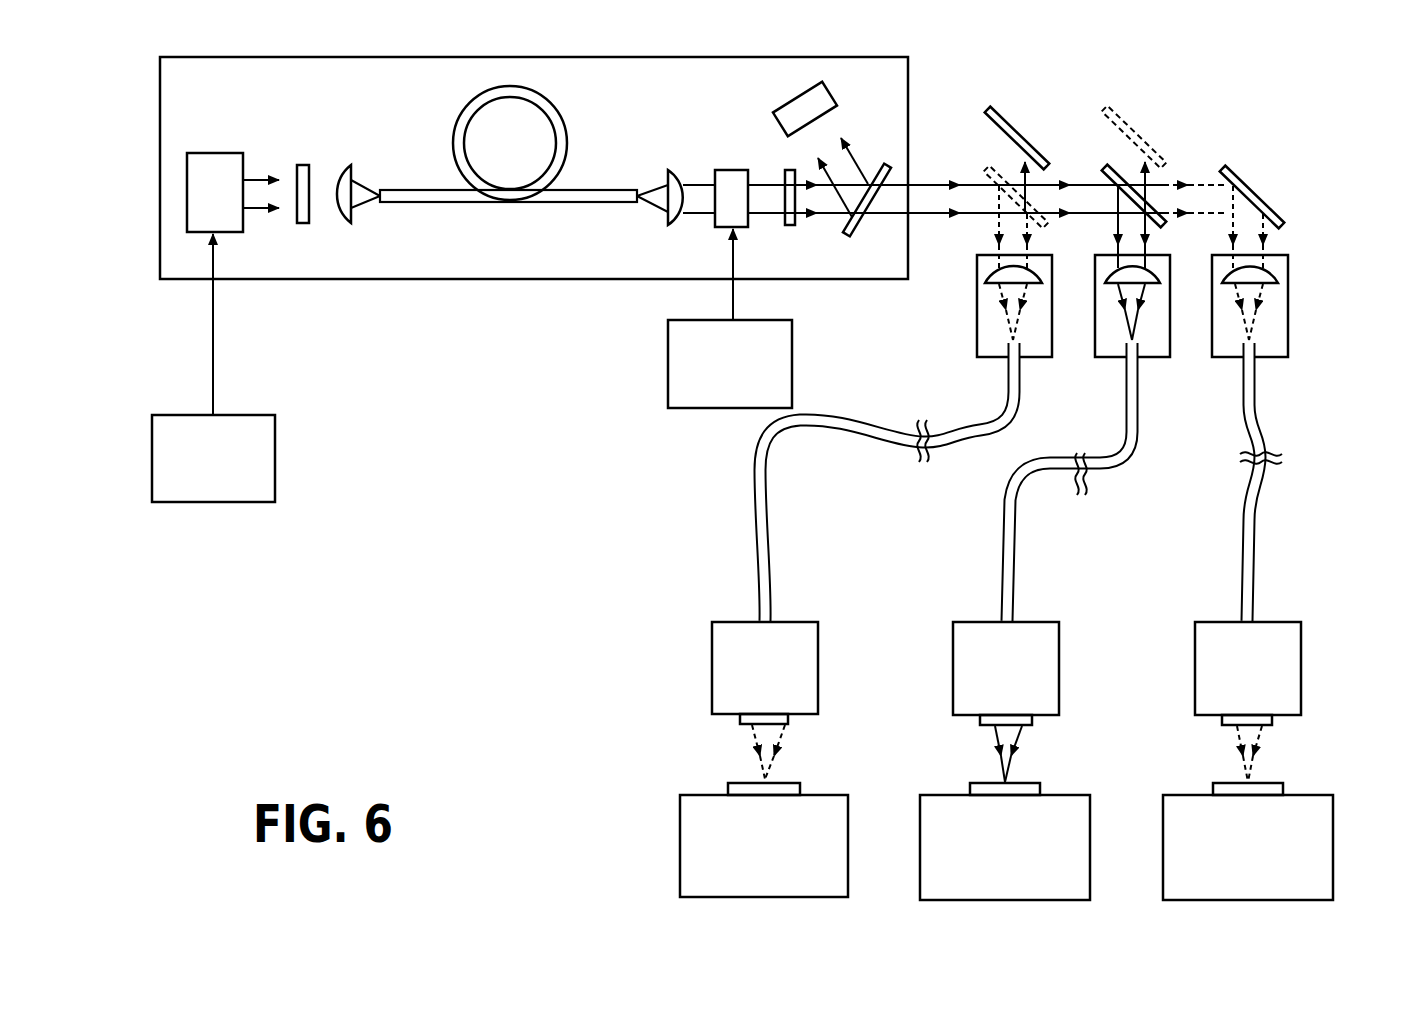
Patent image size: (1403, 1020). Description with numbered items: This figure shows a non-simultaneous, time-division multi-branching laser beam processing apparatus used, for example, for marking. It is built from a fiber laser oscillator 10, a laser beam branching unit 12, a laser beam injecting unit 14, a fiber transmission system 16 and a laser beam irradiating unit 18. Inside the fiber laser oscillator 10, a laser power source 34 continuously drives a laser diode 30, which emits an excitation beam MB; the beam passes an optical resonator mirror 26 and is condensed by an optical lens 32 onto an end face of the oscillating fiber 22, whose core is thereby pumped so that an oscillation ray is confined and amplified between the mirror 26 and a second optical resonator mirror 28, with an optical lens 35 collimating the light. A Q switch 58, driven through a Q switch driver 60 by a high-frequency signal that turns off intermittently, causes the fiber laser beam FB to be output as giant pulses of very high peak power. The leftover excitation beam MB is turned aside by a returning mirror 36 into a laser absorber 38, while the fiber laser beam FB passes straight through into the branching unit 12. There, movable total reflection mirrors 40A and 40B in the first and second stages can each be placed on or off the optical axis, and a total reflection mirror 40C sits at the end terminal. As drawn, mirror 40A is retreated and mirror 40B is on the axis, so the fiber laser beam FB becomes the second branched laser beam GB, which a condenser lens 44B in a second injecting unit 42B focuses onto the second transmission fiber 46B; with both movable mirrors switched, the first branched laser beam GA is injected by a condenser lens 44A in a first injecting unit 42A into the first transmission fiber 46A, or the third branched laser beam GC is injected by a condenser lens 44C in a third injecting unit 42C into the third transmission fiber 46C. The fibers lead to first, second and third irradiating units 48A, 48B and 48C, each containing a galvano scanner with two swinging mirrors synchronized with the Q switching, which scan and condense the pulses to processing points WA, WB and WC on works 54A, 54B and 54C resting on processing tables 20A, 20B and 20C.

The fiber laser oscillator 10 is at (463, 302).
The laser beam branching unit 12 is at (1162, 111).
The laser beam injecting unit 14 is at (1306, 203).
The fiber transmission system 16 is at (1308, 447).
The laser beam irradiating unit 18 is at (654, 691).
The processing table 20A is at (680, 852).
The processing table 20B is at (920, 852).
The processing table 20C is at (1163, 855).
The oscillating fiber 22 is at (561, 112).
The optical resonator mirror 26 is at (305, 164).
The optical resonator mirror 28 is at (783, 224).
The laser diode 30 is at (218, 153).
The optical lens 32 is at (350, 164).
The laser power source 34 is at (276, 460).
The optical lens 35 is at (667, 172).
The returning mirror 36 is at (852, 234).
The laser absorber 38 is at (836, 93).
The total reflection mirror 40A is at (1016, 109).
The total reflection mirror 40B is at (1108, 165).
The total reflection mirror 40C is at (1251, 165).
The first injecting unit 42A is at (976, 333).
The second injecting unit 42B is at (1170, 347).
The third injecting unit 42C is at (1289, 334).
The condenser lens 44A is at (986, 271).
The condenser lens 44B is at (1158, 288).
The condenser lens 44C is at (1283, 278).
The first transmission fiber 46A is at (768, 484).
The second transmission fiber 46B is at (1036, 497).
The third transmission fiber 46C is at (1259, 520).
The first irradiating unit 48A is at (712, 668).
The second irradiating unit 48B is at (953, 668).
The third irradiating unit 48C is at (1195, 668).
The work 54A is at (740, 784).
The work 54B is at (975, 784).
The work 54C is at (1215, 784).
The Q switch 58 is at (734, 168).
The Q switch driver 60 is at (667, 362).
The excitation beam MB is at (262, 214).
The fiber laser beam FB is at (832, 218).
The first branched laser beam GA is at (988, 226).
The second branched laser beam GB is at (1112, 226).
The third branched laser beam GC is at (1228, 226).
The processing point WA is at (774, 777).
The processing point WB is at (1014, 778).
The processing point WC is at (1256, 778).